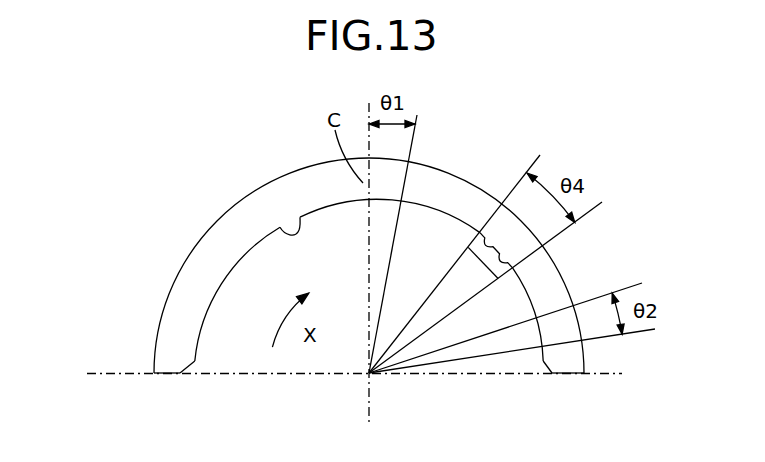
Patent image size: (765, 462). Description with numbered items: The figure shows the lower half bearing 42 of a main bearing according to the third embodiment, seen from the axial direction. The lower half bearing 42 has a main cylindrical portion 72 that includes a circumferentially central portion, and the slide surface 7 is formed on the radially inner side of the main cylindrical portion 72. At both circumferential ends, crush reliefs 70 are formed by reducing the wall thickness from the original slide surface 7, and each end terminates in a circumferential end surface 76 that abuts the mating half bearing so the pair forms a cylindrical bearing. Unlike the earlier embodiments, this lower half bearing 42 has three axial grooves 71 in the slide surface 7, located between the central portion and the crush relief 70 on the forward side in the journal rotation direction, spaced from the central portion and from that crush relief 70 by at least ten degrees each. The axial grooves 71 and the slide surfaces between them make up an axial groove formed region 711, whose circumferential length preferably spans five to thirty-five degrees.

The lower half bearing 42 is at (185, 262).
The slide surface 7 is at (282, 226).
The main cylindrical portion 72 is at (297, 193).
The crush relief 70 is at (193, 361).
The circumferential end surface 76 is at (167, 374).
The axial groove 71 is at (481, 238).
The axial groove formed region 711 is at (478, 268).